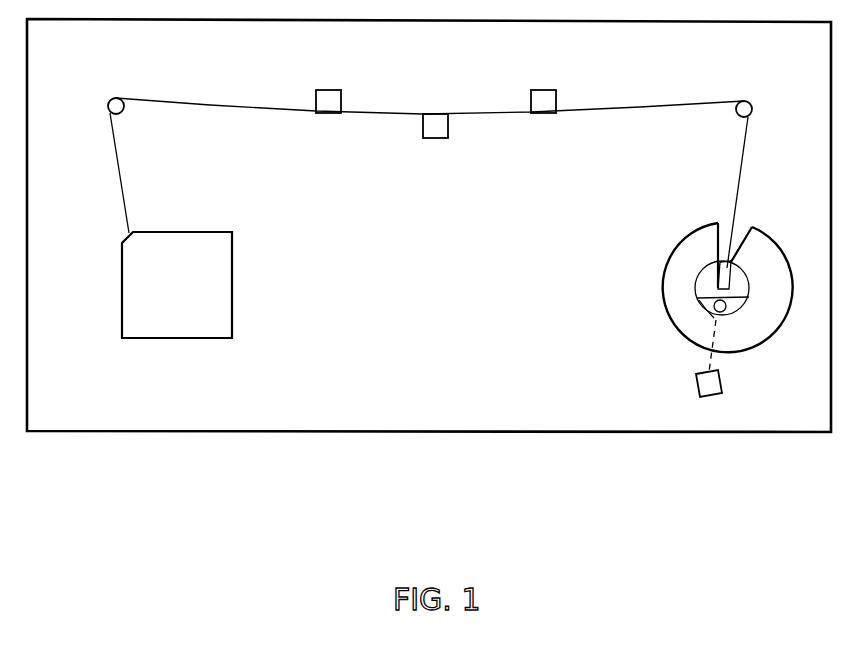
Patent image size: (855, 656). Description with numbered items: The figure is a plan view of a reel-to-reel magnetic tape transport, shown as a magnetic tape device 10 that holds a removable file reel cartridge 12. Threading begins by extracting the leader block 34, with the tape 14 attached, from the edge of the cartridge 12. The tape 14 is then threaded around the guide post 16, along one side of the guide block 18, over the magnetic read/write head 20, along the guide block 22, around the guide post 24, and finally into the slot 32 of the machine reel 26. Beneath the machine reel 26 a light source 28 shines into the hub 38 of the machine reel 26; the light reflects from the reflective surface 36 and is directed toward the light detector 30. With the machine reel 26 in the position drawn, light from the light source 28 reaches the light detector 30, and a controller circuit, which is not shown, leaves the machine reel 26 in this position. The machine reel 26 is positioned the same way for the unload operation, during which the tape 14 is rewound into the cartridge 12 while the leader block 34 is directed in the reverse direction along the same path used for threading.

The magnetic tape device 10 is at (463, 433).
The file reel cartridge 12 is at (232, 297).
The tape 14 is at (124, 190).
The guide post 16 is at (124, 112).
The guide block 18 is at (328, 90).
The magnetic read/write head 20 is at (432, 138).
The guide block 22 is at (543, 90).
The guide post 24 is at (752, 109).
The machine reel 26 is at (657, 288).
The light source 28 is at (727, 312).
The light detector 30 is at (720, 390).
The slot 32 is at (740, 223).
The leader block 34 is at (729, 272).
The reflective surface 36 is at (707, 302).
The hub 38 is at (750, 290).